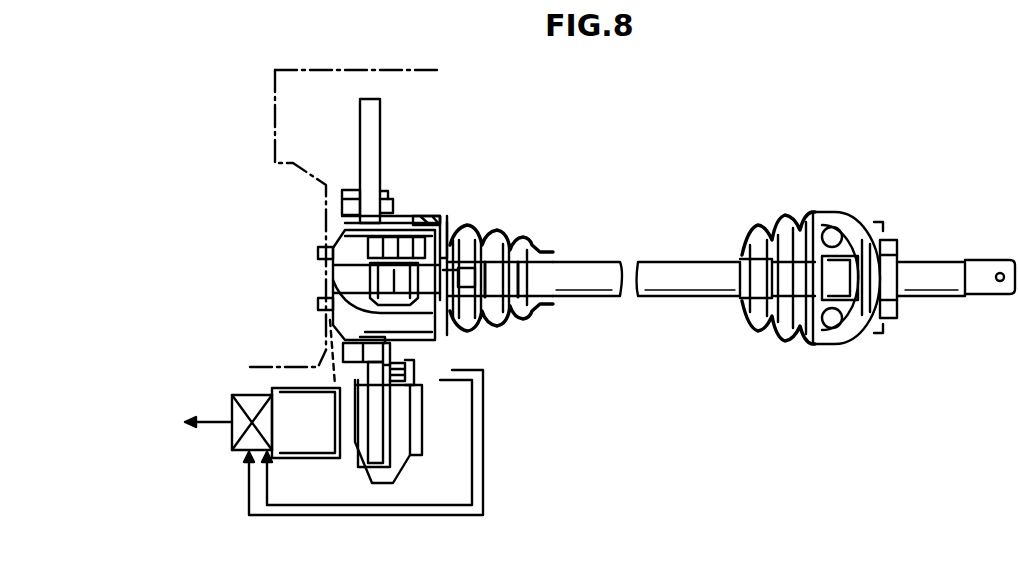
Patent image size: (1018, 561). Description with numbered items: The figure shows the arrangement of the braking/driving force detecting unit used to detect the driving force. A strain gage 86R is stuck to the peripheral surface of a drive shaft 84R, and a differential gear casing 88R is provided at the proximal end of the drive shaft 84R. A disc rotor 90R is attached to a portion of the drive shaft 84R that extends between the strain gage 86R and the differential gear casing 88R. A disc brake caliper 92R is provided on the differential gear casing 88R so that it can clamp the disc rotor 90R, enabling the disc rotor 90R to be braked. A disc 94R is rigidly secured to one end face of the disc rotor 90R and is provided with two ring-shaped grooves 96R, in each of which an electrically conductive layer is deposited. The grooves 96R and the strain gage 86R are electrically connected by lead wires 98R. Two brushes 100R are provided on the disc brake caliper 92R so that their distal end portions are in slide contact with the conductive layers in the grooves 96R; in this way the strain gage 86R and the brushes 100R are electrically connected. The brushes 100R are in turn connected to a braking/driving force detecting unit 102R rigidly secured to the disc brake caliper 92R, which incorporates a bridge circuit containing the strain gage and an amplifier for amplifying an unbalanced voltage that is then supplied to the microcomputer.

The drive shaft 84R is at (584, 265).
The strain gage 86R is at (521, 288).
The differential gear casing 88R is at (297, 133).
The disc rotor 90R is at (380, 127).
The disc brake caliper 92R is at (346, 470).
The disc 94R is at (375, 194).
The ring-shaped grooves 96R is at (388, 199).
The lead wires 98R is at (440, 220).
The brushes 100R is at (405, 369).
The braking/driving force detecting unit 102R is at (242, 394).